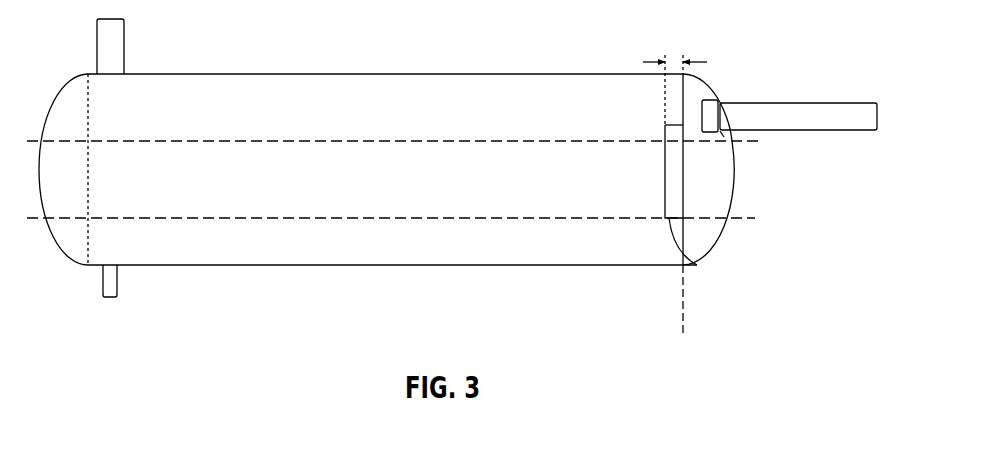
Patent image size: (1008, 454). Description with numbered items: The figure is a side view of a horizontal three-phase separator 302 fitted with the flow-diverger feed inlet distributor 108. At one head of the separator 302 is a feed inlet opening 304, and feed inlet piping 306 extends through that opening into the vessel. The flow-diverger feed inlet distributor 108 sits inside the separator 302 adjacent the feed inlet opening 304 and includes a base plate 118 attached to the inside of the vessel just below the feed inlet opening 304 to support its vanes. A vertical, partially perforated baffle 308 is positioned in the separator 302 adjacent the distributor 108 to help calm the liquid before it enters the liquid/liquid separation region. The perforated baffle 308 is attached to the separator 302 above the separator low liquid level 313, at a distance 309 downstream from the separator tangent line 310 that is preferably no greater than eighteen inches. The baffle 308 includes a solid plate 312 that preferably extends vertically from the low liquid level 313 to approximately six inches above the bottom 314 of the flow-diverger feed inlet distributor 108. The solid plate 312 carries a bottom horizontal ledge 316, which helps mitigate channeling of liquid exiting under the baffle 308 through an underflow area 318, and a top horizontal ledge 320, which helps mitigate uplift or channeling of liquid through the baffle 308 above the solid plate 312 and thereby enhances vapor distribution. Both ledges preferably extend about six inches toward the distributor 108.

The 3-phase separator 302 is at (400, 74).
The feed inlet opening 304 is at (722, 110).
The feed inlet piping 306 is at (823, 102).
The flow-diverger feed inlet distributor 108 is at (719, 89).
The base plate 118 is at (706, 134).
The perforated baffle 308 is at (623, 146).
The distance 309 is at (693, 61).
The separator tangent line 310 is at (684, 308).
The solid plate 312 is at (662, 178).
The separator low liquid level 313 is at (754, 218).
The bottom of the flow-diverger feed inlet distributor 314 is at (712, 134).
The bottom horizontal ledge 316 is at (697, 265).
The underflow area 318 is at (644, 256).
The top horizontal ledge 320 is at (678, 125).